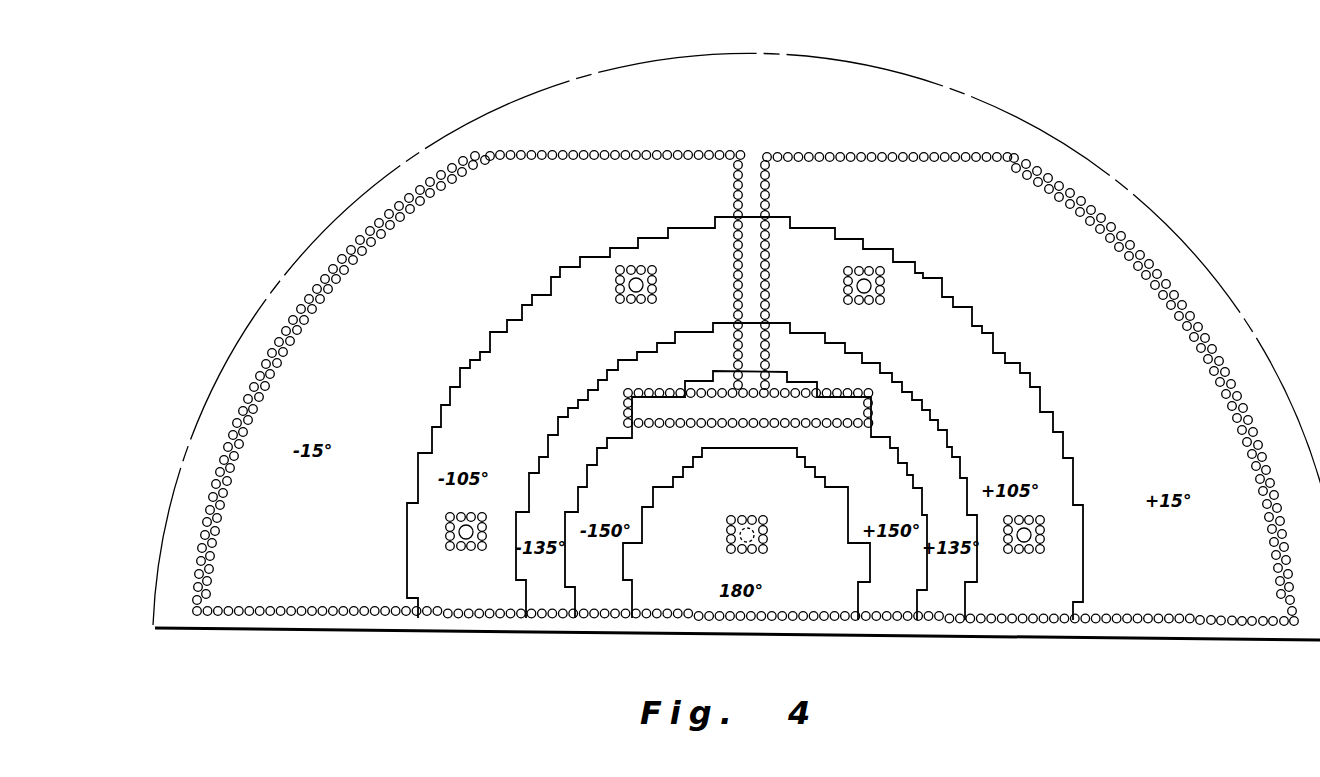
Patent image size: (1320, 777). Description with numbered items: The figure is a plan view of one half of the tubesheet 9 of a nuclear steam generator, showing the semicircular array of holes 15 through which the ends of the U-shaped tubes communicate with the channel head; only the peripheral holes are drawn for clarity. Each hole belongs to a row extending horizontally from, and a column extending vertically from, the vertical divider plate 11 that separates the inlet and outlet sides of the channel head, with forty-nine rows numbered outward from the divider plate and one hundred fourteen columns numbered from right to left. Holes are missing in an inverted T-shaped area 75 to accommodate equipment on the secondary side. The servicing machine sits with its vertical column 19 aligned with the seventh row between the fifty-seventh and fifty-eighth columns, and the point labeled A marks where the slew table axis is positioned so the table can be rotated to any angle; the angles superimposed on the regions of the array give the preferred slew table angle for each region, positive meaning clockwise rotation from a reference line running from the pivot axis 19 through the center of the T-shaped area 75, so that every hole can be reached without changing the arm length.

The tubesheet 9 is at (940, 100).
The vertical divider plate 11 is at (183, 627).
The holes 15 is at (848, 157).
The inverted T-shaped area 75 is at (750, 285).
The slewing area point A is at (749, 404).
The vertical column 19 is at (763, 525).